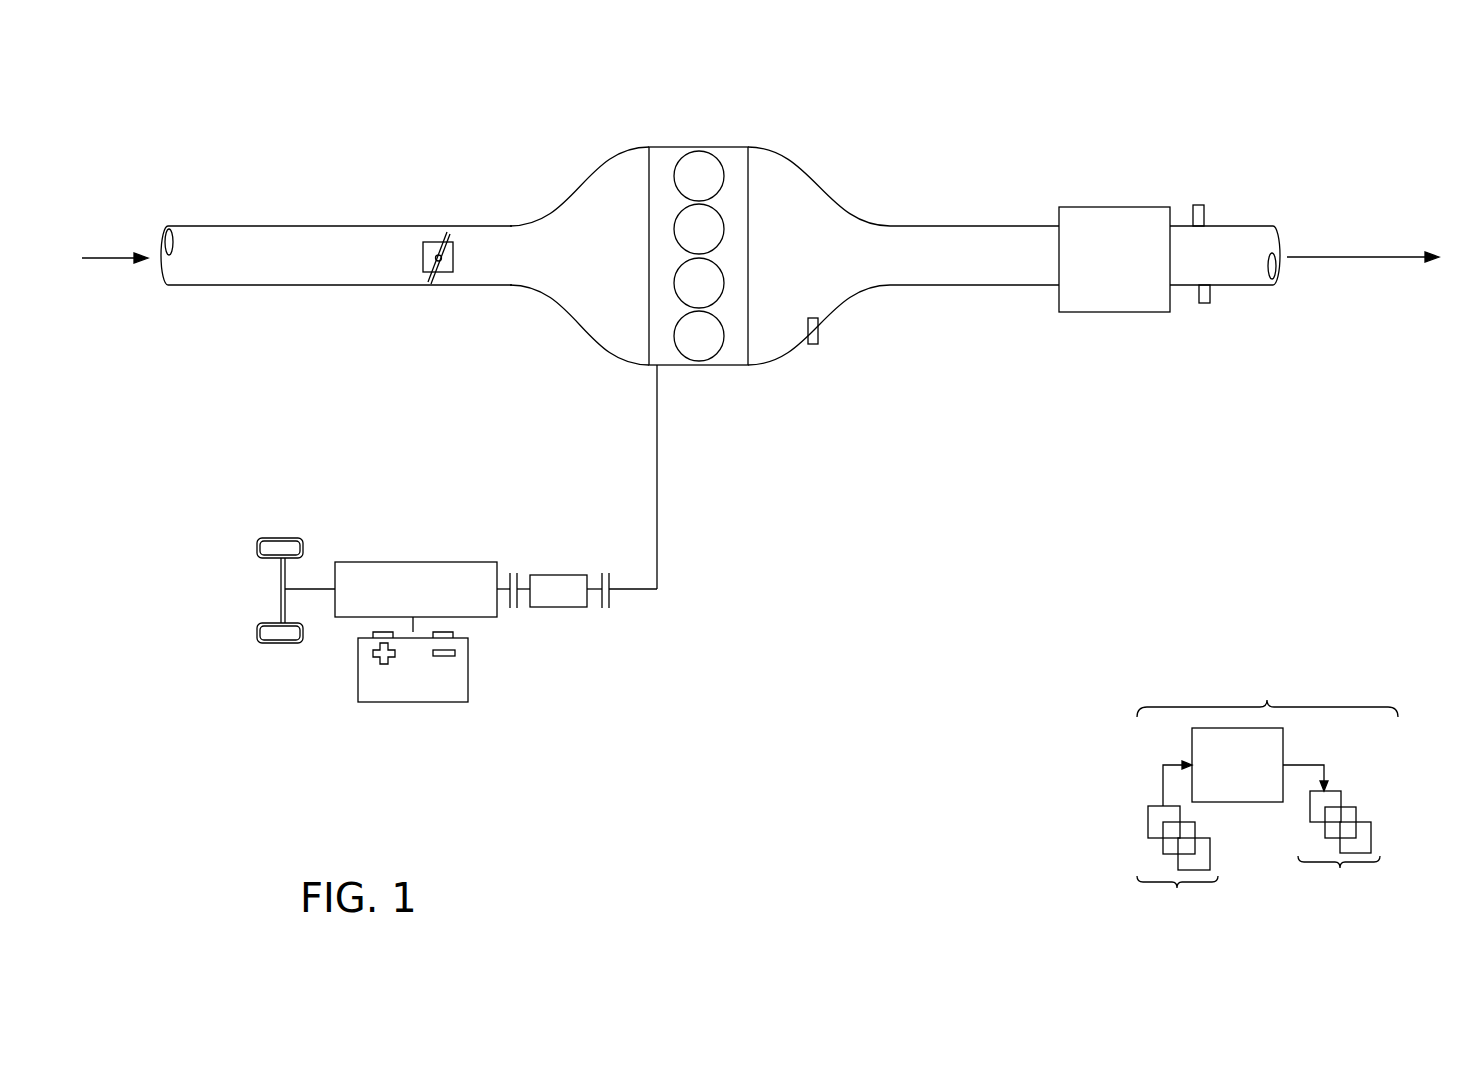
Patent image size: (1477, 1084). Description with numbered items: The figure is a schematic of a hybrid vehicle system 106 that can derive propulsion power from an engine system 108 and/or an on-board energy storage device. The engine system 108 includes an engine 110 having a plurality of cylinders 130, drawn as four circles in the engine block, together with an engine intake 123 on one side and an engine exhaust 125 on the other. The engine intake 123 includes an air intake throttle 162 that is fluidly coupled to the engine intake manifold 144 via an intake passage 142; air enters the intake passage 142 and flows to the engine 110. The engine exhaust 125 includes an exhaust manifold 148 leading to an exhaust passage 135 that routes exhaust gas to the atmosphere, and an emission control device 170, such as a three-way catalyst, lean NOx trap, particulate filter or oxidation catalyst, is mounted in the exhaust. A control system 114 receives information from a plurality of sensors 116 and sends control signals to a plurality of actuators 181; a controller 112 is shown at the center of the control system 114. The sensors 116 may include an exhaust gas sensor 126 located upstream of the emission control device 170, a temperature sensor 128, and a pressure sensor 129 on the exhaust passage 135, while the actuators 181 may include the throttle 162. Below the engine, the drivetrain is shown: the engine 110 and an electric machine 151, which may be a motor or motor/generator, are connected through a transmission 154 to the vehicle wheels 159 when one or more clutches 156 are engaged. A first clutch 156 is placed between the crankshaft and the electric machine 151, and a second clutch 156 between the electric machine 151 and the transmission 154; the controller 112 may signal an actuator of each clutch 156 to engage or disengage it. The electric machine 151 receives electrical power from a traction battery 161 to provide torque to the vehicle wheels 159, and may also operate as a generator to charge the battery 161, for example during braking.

The hybrid vehicle system 106 is at (178, 121).
The engine system 108 is at (1312, 120).
The engine 110 is at (720, 256).
The controller 112 is at (1237, 765).
The control system 114 is at (1267, 793).
The sensors 116 is at (1177, 846).
The engine intake 123 is at (570, 175).
The engine exhaust 125 is at (870, 182).
The exhaust gas sensor 126 is at (818, 320).
The temperature sensor 128 is at (1204, 303).
The pressure sensor 129 is at (1199, 205).
The cylinders 130 is at (722, 168).
The exhaust passage 135 is at (1250, 226).
The intake passage 142 is at (195, 285).
The engine intake manifold 144 is at (607, 257).
The exhaust manifold 148 is at (829, 257).
The electric machine 151 is at (557, 608).
The transmission 154 is at (358, 617).
The clutches 156 is at (517, 580).
The vehicle wheels 159 is at (280, 642).
The traction battery 161 is at (420, 702).
The air intake throttle 162 is at (453, 268).
The emission control device 170 is at (1100, 207).
The actuators 181 is at (1332, 839).